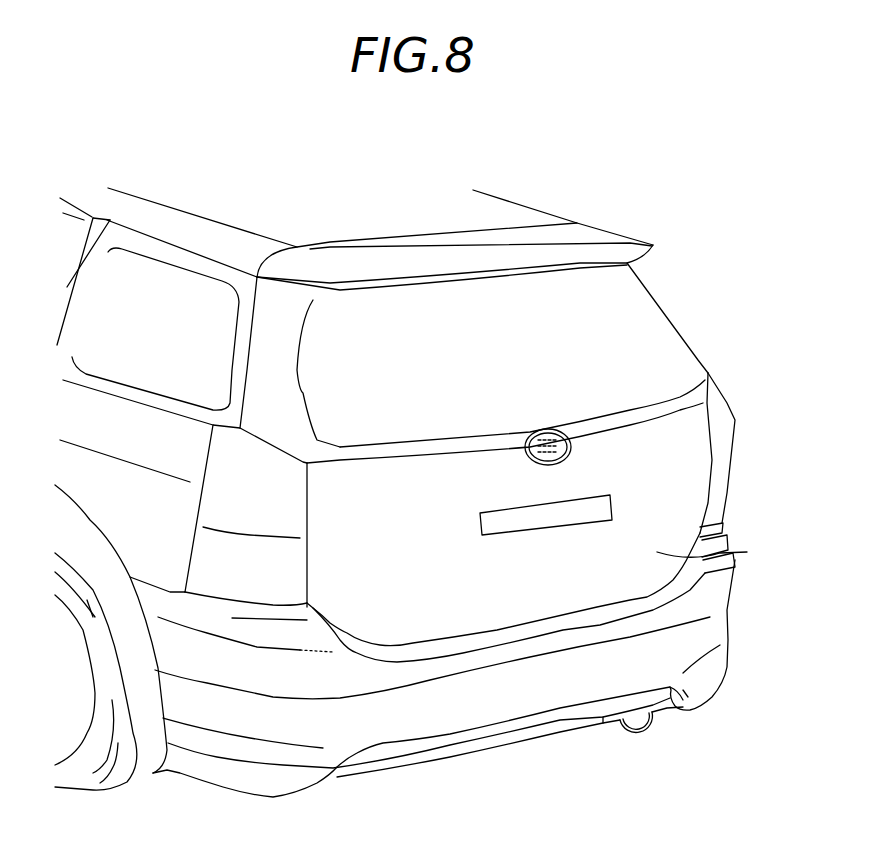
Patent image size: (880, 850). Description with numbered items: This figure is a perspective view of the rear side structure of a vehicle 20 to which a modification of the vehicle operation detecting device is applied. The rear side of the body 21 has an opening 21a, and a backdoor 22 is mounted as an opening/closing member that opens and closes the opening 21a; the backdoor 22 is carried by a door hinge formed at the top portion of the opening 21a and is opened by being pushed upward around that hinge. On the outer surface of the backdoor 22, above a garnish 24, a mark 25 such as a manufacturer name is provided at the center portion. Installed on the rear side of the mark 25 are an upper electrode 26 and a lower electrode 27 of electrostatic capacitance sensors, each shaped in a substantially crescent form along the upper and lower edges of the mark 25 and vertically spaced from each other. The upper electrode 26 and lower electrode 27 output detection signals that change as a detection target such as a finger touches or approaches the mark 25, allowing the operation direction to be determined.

The vehicle 20 is at (608, 182).
The body 21 is at (510, 201).
The opening 21a is at (303, 506).
The backdoor 22 is at (735, 553).
The garnish 24 is at (497, 535).
The mark 25 is at (527, 457).
The upper electrode 26 is at (545, 428).
The lower electrode 27 is at (560, 468).